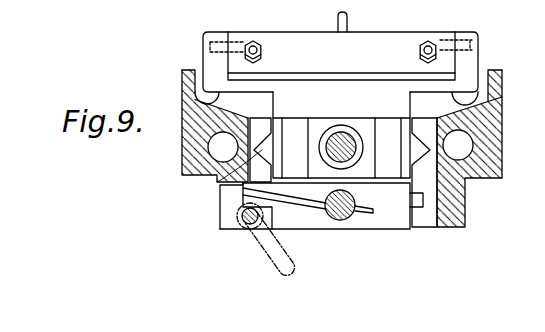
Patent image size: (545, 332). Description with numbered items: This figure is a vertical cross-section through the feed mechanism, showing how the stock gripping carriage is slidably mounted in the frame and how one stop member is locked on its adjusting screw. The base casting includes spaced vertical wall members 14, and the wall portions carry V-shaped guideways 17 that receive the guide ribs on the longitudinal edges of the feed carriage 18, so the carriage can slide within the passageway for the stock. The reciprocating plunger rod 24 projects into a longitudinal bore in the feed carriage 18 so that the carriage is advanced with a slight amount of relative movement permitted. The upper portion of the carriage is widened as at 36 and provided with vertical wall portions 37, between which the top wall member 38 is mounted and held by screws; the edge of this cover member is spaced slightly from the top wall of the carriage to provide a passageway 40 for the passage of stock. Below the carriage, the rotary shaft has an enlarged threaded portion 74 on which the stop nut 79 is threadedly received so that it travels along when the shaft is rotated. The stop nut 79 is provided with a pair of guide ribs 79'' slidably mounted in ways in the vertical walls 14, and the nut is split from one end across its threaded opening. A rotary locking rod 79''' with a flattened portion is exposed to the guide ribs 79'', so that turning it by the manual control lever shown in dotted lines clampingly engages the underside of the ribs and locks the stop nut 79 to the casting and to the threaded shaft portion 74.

The vertical wall members 14 is at (180, 80).
The V-shaped guideways 17 is at (217, 178).
The feed carriage 18 is at (341, 134).
The reciprocating plunger rod 24 is at (333, 133).
The widened upper portion of the feed carriage 36 is at (180, 98).
The vertical wall portions 37 is at (210, 62).
The top wall member 38 is at (378, 40).
The passageway 40 is at (290, 79).
The enlarged threaded portion 74 is at (340, 220).
The stop nut 79 is at (315, 220).
The guide ribs 79'' is at (347, 206).
The rotary locking rod 79''' is at (257, 239).